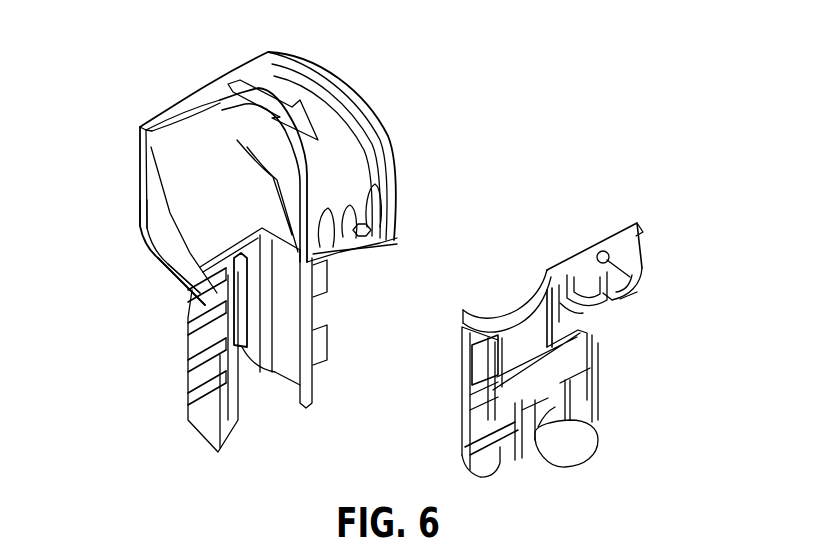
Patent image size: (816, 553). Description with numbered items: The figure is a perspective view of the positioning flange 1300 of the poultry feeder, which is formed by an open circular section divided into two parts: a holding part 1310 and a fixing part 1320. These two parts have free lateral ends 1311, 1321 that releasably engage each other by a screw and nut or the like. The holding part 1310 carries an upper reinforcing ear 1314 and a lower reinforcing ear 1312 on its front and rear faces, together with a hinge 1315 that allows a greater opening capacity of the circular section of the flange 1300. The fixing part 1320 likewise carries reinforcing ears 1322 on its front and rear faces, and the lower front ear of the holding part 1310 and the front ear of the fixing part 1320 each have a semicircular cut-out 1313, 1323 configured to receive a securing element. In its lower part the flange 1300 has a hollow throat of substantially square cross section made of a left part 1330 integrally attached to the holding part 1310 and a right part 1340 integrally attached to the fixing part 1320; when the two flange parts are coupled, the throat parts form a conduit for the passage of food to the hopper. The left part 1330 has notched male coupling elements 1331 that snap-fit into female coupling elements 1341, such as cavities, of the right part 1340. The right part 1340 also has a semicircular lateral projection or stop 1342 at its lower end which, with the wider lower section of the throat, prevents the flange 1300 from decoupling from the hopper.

The positioning flange 1300 is at (473, 183).
The holding part 1310 is at (300, 55).
The free lateral end 1311 is at (372, 234).
The lower reinforcing ear 1312 is at (145, 227).
The semicircular cut-out 1313 is at (163, 257).
The upper reinforcing ear 1314 is at (307, 177).
The hinge 1315 is at (140, 130).
The fixing part 1320 is at (640, 243).
The free lateral end 1321 is at (642, 283).
The reinforcing ear 1322 is at (530, 310).
The semicircular cut-out 1323 is at (612, 302).
The left part of the throat 1330 is at (196, 380).
The notched male coupling element 1331 is at (238, 417).
The right part of the throat 1340 is at (475, 385).
The female coupling element 1341 is at (478, 340).
The semicircular lateral projection or stop 1342 is at (570, 448).